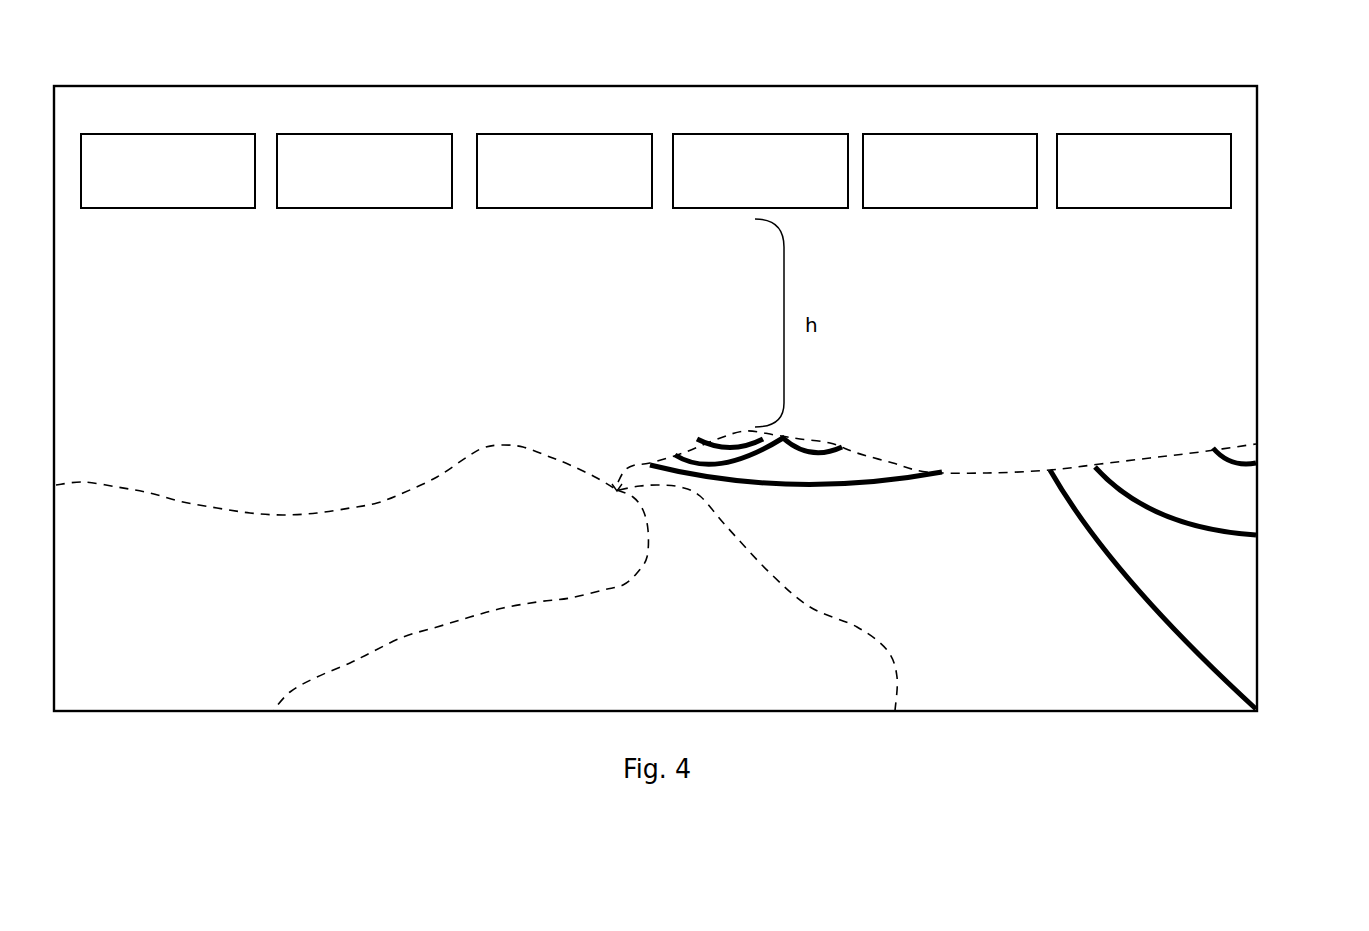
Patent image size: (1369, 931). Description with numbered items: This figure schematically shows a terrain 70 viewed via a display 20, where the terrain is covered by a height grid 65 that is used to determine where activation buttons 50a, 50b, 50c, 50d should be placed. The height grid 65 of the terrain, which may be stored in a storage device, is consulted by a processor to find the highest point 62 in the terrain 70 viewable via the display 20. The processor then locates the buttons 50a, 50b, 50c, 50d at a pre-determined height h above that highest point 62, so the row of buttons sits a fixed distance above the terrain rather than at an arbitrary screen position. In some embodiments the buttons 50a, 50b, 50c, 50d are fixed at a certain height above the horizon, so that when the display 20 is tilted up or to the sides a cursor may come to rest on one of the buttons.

The display 20 is at (1222, 344).
The activation button 50a is at (559, 171).
The activation button 50b is at (760, 171).
The activation button 50c is at (564, 171).
The activation button 50d is at (754, 171).
The highest point 62 is at (718, 432).
The height grid 65 is at (800, 463).
The terrain 70 is at (480, 467).